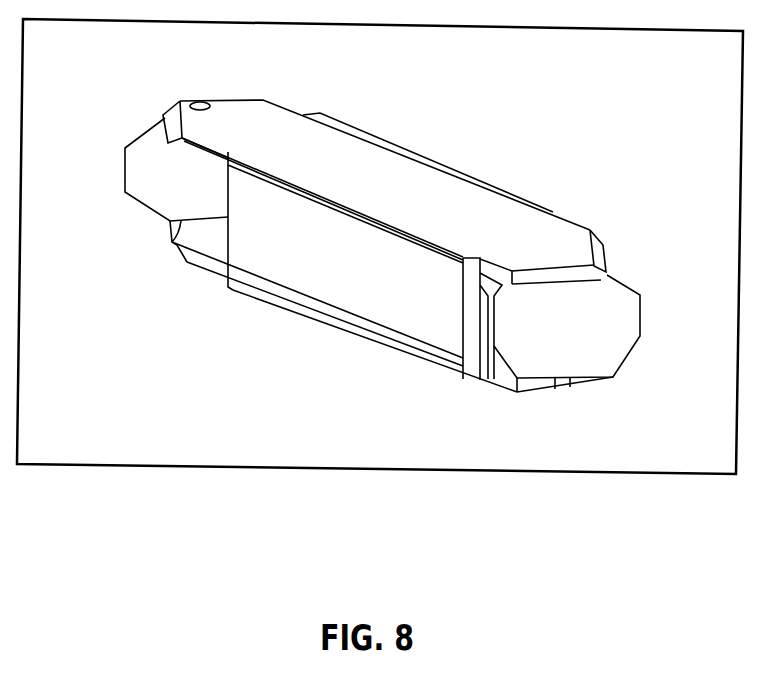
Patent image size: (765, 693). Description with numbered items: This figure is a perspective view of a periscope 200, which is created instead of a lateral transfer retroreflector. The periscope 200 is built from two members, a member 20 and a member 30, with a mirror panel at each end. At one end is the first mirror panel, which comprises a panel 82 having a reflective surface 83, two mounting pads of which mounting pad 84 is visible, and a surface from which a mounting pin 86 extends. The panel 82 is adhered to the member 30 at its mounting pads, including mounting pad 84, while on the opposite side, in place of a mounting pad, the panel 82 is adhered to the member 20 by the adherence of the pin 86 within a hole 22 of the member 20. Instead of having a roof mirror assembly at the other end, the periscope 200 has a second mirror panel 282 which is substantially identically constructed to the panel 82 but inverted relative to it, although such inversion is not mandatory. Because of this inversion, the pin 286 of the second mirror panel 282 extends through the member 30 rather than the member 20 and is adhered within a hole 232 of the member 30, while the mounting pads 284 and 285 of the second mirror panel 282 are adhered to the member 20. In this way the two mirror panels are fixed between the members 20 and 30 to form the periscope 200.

The periscope 200 is at (288, 437).
The member 20 is at (563, 237).
The hole 22 is at (189, 93).
The mounting pin 86 is at (202, 103).
The reflective surface 83 is at (189, 192).
The panel 82 is at (124, 197).
The mounting pad 84 is at (173, 243).
The mounting pad 284 is at (532, 282).
The mounting pad 285 is at (598, 285).
The member 30 is at (542, 387).
The second mirror panel 282 is at (544, 343).
The hole 232 is at (614, 378).
The pin 286 is at (566, 392).